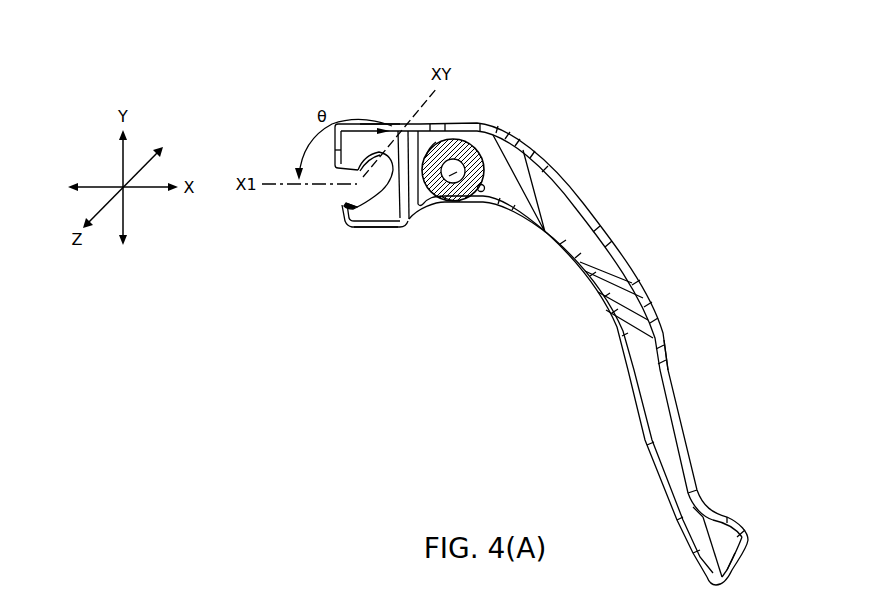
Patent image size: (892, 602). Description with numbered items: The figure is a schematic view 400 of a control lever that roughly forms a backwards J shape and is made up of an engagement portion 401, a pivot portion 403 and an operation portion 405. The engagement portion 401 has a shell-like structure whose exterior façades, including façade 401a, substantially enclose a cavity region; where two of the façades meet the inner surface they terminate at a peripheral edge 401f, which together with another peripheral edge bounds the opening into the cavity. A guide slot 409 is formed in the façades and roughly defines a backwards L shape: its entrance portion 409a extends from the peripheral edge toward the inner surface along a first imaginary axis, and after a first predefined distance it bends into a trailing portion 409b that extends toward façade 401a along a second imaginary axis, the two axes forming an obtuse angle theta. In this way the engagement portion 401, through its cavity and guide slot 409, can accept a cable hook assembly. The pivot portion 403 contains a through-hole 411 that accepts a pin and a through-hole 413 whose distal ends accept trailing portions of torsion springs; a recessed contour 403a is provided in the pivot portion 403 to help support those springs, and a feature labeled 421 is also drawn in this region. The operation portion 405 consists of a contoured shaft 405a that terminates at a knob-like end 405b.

The schematic view 400 is at (748, 168).
The engagement portion 401 is at (335, 48).
The exterior façade 401a is at (394, 124).
The peripheral edge 401f is at (372, 229).
The pivot portion 403 is at (416, 48).
The recessed contour 403a is at (445, 138).
The operation portion 405 is at (757, 48).
The contoured shaft 405a is at (655, 364).
The knob-like end 405b is at (729, 550).
The guide slot 409 is at (344, 193).
The entrance portion 409a is at (350, 206).
The trailing portion 409b is at (378, 178).
The through-hole 411 is at (446, 146).
The through-hole 413 is at (485, 202).
The pivot bottom 421 is at (449, 200).